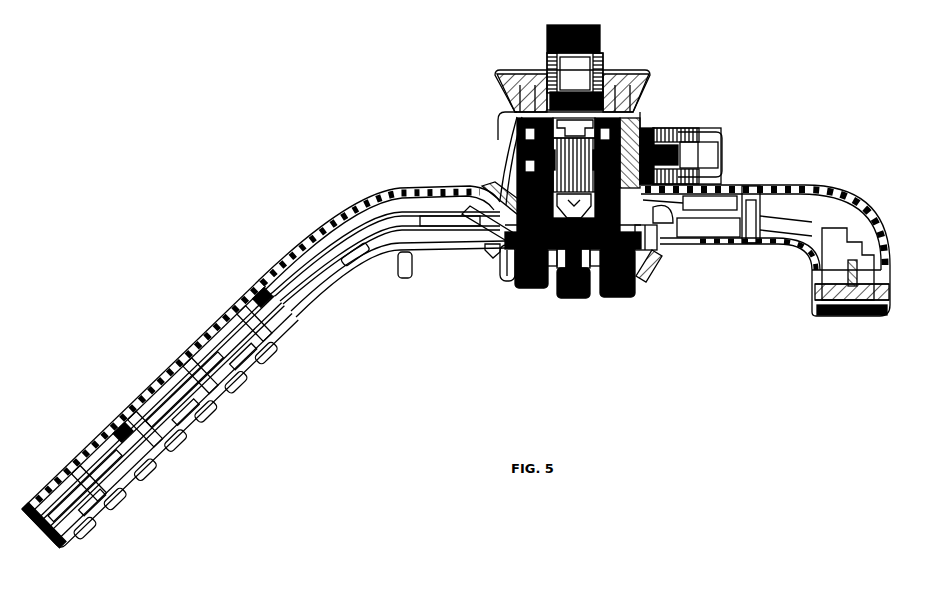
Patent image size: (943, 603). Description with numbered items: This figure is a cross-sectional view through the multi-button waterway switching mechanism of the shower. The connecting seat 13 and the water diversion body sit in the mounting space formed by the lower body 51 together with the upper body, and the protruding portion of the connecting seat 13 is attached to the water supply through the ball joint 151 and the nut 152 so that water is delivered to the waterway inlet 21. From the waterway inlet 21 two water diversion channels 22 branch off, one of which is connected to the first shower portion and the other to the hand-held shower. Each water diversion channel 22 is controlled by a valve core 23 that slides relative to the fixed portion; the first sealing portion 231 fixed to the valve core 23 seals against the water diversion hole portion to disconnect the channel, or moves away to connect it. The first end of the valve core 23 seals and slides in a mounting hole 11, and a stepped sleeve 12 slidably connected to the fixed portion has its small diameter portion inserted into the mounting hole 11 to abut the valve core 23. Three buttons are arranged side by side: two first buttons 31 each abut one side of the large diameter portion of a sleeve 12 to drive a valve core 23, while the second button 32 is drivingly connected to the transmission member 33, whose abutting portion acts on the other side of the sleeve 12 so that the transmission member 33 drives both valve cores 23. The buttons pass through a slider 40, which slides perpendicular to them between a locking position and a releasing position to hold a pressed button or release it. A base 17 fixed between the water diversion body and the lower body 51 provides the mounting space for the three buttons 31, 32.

The mounting hole 11 is at (660, 228).
The sleeve 12 is at (493, 253).
The connecting seat 13 is at (514, 110).
The ball joint 151 is at (603, 52).
The nut 152 is at (645, 80).
The base 17 is at (641, 268).
The waterway inlet 21 is at (514, 130).
The water diversion channel 22 is at (530, 177).
The valve core 23 is at (522, 146).
The first sealing portion 231 is at (525, 163).
The first button 31 is at (537, 288).
The second button 32 is at (574, 298).
The transmission member 33 is at (627, 244).
The slider 40 is at (517, 273).
The lower body 51 is at (400, 255).